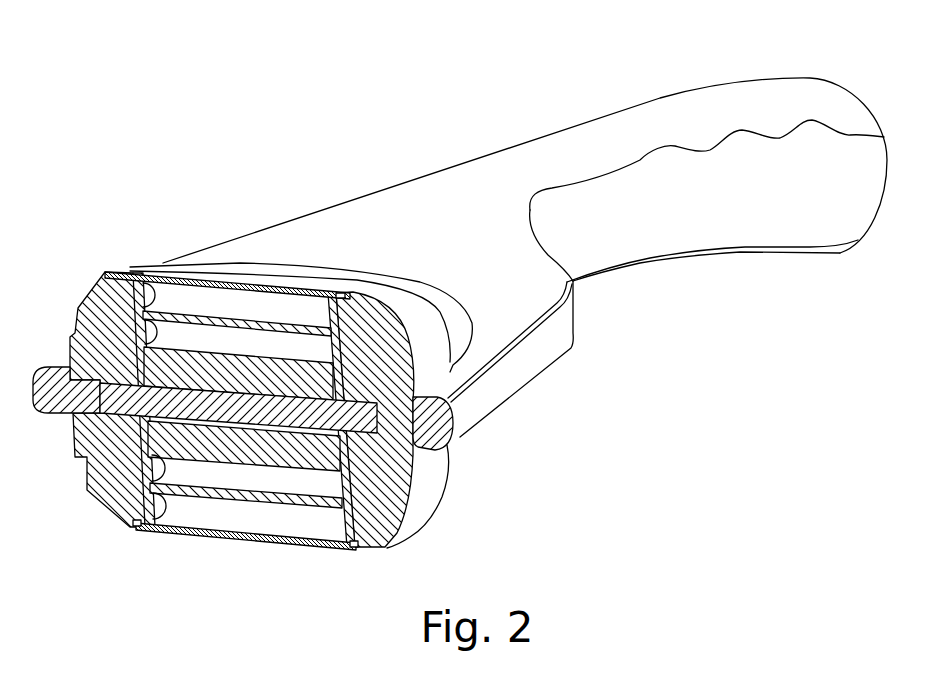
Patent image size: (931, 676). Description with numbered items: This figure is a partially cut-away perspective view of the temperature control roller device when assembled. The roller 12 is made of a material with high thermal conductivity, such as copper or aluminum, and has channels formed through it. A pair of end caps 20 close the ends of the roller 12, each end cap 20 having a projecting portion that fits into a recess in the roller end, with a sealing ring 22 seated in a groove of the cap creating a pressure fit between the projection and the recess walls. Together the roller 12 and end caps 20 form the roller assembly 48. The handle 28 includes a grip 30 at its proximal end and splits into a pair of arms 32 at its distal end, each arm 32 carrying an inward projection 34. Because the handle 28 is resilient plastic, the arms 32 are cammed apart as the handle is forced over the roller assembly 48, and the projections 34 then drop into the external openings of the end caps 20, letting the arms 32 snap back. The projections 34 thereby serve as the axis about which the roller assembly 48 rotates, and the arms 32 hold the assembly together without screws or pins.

The roller 12 is at (140, 267).
The end caps 20 is at (78, 303).
The sealing ring 22 is at (138, 529).
The handle 28 is at (527, 99).
The grip 30 is at (745, 87).
The arms 32 is at (548, 362).
The projection 34 is at (78, 414).
The roller assembly 48 is at (214, 550).